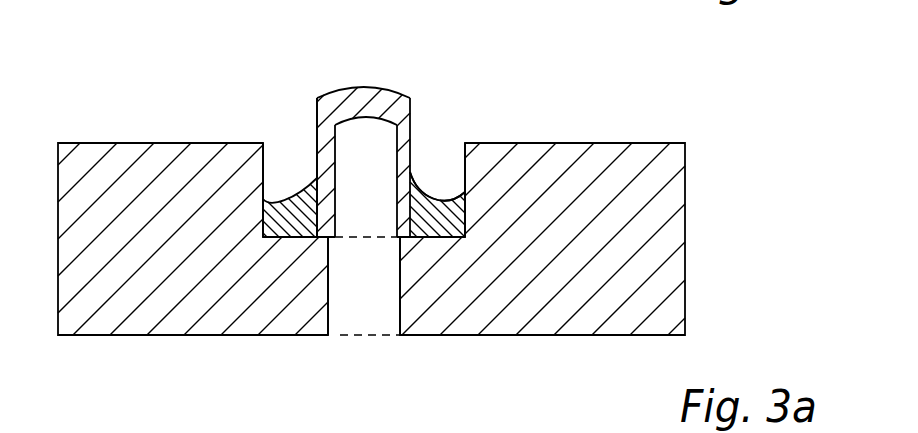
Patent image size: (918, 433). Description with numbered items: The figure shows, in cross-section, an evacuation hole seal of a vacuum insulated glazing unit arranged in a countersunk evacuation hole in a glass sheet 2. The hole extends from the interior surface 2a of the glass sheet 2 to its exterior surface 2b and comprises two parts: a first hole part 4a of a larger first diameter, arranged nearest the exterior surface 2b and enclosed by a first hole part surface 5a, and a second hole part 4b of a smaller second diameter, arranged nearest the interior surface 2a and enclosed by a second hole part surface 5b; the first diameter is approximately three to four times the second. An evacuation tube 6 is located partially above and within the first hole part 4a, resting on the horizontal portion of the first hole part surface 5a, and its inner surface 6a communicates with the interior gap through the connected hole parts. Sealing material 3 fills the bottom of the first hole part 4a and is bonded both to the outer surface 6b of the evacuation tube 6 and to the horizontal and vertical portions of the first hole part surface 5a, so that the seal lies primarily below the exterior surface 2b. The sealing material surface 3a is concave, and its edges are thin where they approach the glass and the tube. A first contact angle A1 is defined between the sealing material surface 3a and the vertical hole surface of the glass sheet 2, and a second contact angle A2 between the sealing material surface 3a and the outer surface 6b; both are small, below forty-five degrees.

The glass sheet 2 is at (608, 150).
The interior surface of the glass sheet 2a is at (260, 340).
The exterior surface of the glass sheet 2b is at (554, 137).
The sealing material 3 is at (459, 209).
The sealing material surface 3a is at (414, 185).
The first hole part 4a is at (460, 175).
The second hole part 4b is at (380, 308).
The first hole part surface 5a is at (260, 198).
The second hole part surface 5b is at (330, 317).
The evacuation tube 6 is at (413, 172).
The inner surface of the evacuation member 6a is at (337, 148).
The outer surface of the evacuation tube 6b is at (317, 132).
The first contact angle A1 is at (255, 203).
The second contact angle A2 is at (306, 179).